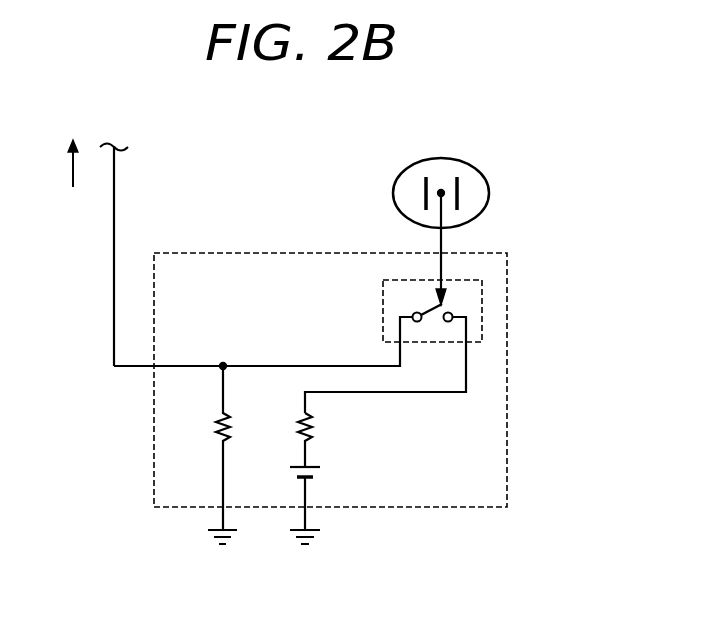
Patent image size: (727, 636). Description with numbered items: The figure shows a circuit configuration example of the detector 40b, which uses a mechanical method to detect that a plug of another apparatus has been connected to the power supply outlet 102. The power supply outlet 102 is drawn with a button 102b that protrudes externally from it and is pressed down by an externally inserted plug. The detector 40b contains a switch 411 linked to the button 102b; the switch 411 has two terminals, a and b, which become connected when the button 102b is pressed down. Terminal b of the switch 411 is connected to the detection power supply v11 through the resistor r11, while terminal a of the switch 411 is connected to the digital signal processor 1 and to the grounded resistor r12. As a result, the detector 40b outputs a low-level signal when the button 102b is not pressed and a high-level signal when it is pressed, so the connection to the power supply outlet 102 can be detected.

The digital signal processor 1 is at (65, 163).
The detector 40b is at (310, 366).
The power supply outlet 102 is at (481, 196).
The button 102b is at (443, 190).
The switch 411 is at (383, 300).
The resistor r11 is at (330, 440).
The grounded resistor r12 is at (206, 455).
The detection power supply v11 is at (328, 501).